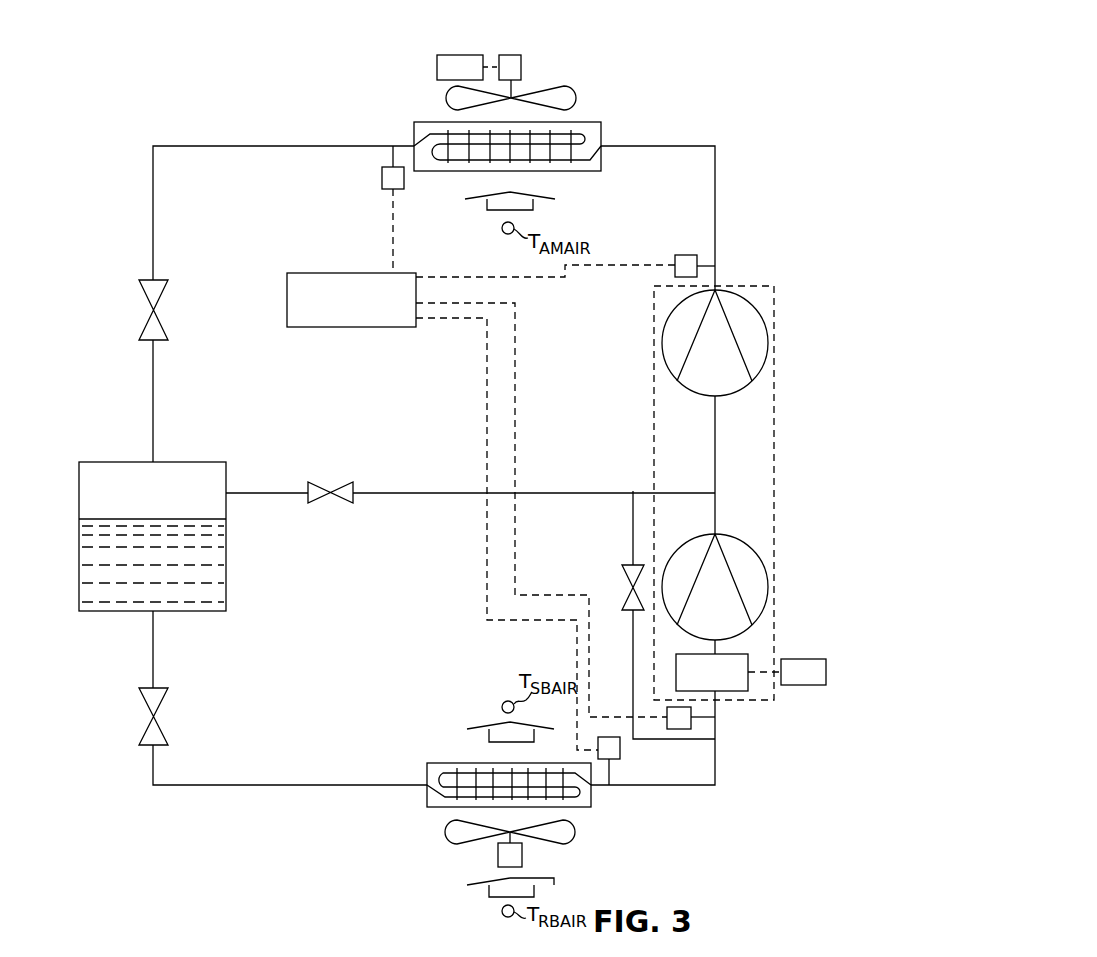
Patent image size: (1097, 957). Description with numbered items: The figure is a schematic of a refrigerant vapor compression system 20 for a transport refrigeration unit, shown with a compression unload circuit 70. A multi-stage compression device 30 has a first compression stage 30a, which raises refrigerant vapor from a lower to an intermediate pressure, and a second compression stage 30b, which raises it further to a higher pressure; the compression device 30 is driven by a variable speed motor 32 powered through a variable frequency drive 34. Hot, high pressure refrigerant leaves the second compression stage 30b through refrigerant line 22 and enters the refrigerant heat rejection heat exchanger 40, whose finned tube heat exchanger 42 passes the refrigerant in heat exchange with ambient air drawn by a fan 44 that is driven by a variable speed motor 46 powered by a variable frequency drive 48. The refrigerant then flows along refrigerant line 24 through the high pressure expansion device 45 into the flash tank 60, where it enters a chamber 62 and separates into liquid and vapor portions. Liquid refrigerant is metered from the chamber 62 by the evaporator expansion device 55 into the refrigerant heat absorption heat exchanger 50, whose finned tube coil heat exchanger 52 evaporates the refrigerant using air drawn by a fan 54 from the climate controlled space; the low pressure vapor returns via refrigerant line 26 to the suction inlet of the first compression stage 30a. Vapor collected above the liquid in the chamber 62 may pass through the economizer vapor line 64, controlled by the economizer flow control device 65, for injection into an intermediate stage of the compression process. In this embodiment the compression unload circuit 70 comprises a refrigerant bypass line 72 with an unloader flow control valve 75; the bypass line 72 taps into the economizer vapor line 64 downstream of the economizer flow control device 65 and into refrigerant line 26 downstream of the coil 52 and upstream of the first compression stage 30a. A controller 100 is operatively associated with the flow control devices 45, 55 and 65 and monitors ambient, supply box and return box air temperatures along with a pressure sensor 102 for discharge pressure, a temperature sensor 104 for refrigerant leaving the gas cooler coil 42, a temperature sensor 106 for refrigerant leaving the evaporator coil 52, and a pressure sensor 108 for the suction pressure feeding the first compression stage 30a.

The refrigerant vapor compression system 20 is at (700, 79).
The refrigerant line 22 is at (715, 210).
The refrigerant line 24 is at (153, 218).
The refrigerant line 26 is at (715, 722).
The multi-stage compression device 30 is at (745, 286).
The first compression stage 30a is at (722, 534).
The second compression stage 30b is at (704, 398).
The variable speed motor 32 is at (740, 654).
The variable frequency drive 34 is at (803, 659).
The refrigerant heat rejection heat exchanger 40 is at (529, 159).
The finned tube heat exchanger 42 is at (588, 140).
The fan 44 is at (556, 92).
The variable speed motor 46 is at (521, 67).
The variable frequency drive 48 is at (453, 55).
The refrigerant heat absorption heat exchanger 50 is at (518, 788).
The finned tube coil heat exchanger 52 is at (436, 776).
The fan 54 is at (464, 840).
The evaporator expansion device 55 is at (160, 732).
The flash tank 60 is at (98, 462).
The chamber 62 is at (182, 478).
The economizer vapor line 64 is at (284, 493).
The economizer flow control device 65 is at (338, 482).
The compression unload circuit 70 is at (645, 537).
The refrigerant bypass line 72 is at (633, 650).
The unloader flow control valve 75 is at (624, 570).
The high pressure expansion device 45 is at (160, 322).
The controller 100 is at (290, 273).
The pressure sensor 102 is at (697, 258).
The temperature sensor 104 is at (382, 176).
The temperature sensor 106 is at (620, 748).
The pressure sensor 108 is at (692, 728).